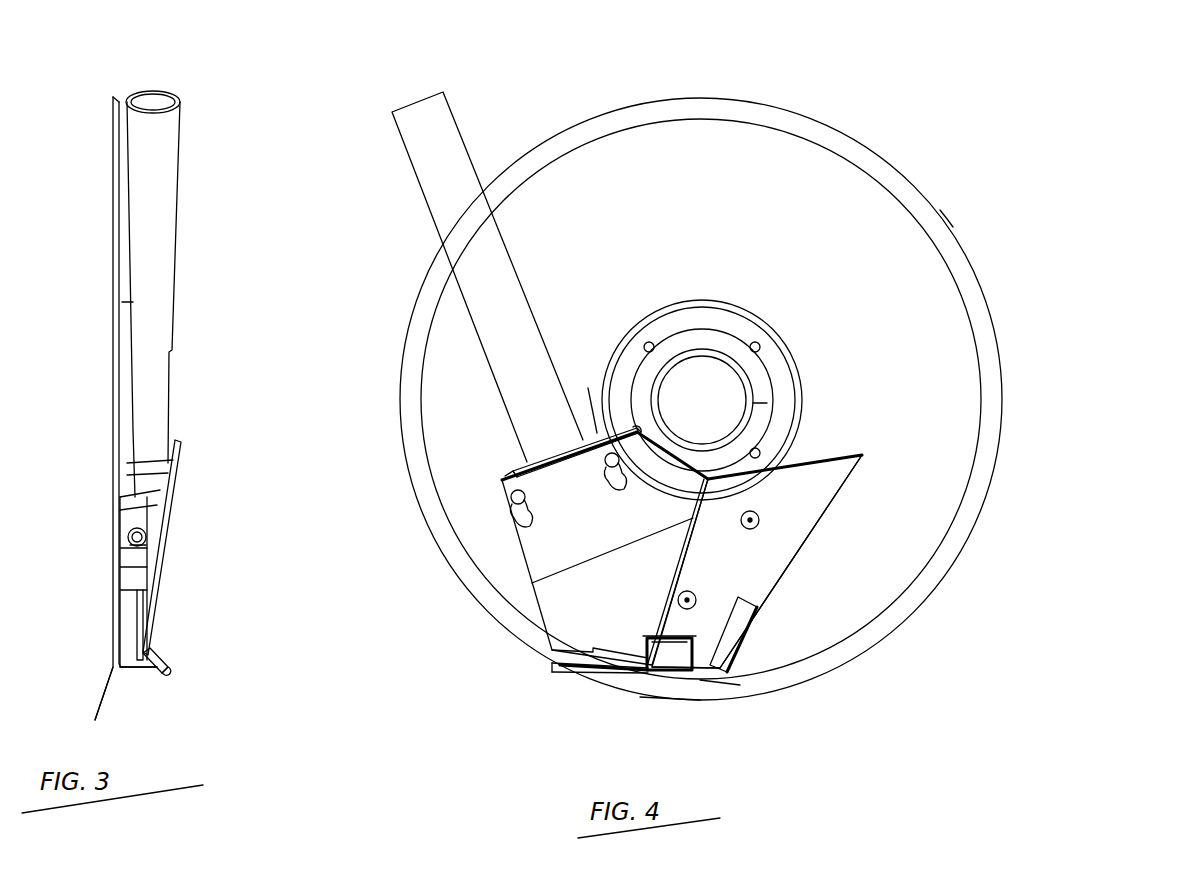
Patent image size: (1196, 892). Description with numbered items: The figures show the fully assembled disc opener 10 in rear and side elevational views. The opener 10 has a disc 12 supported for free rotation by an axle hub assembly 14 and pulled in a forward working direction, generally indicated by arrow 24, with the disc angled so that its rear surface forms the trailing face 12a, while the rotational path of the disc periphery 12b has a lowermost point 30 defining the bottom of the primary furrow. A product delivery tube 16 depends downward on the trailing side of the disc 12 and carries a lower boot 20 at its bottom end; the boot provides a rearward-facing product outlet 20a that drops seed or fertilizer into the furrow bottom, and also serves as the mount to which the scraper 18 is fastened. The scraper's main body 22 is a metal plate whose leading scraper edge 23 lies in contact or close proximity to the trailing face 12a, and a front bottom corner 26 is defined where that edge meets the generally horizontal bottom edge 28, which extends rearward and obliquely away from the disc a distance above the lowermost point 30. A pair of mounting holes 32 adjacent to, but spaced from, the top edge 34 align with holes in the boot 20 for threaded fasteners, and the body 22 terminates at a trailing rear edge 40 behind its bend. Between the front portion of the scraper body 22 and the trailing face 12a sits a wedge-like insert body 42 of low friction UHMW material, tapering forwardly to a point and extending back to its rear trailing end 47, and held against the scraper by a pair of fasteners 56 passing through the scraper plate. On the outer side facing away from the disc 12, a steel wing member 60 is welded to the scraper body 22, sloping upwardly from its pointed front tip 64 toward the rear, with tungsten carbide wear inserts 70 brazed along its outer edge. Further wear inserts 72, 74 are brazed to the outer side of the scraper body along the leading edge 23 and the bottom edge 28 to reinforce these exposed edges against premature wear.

In FIG. 4, the opener 10 is at (1012, 112).
In FIG. 3, the disc 12 is at (117, 240).
In FIG. 4, the disc 12 is at (810, 175).
In FIG. 3, the trailing face 12a is at (122, 273).
In FIG. 4, the trailing face 12a is at (877, 205).
In FIG. 3, the periphery 12b is at (115, 95).
In FIG. 4, the periphery 12b is at (953, 227).
In FIG. 3, the axle hub assembly 14 is at (128, 347).
In FIG. 4, the axle hub assembly 14 is at (715, 375).
In FIG. 3, the product delivery tube 16 is at (168, 212).
In FIG. 4, the product delivery tube 16 is at (503, 283).
In FIG. 3, the scraper 18 is at (177, 468).
In FIG. 4, the scraper 18 is at (778, 483).
In FIG. 3, the lower boot 20 is at (143, 517).
In FIG. 3, the product outlet 20a is at (143, 545).
In FIG. 3, the main body 22 is at (152, 593).
In FIG. 4, the main body 22 is at (768, 542).
In FIG. 4, the leading scraper edge 23 is at (845, 490).
In FIG. 4, the arrow 24 is at (1168, 415).
In FIG. 4, the front bottom corner 26 is at (723, 673).
In FIG. 4, the bottom edge 28 is at (678, 677).
In FIG. 3, the lowermost point 30 is at (110, 700).
In FIG. 4, the lowermost point 30 is at (697, 703).
In FIG. 4, the mounting holes 32 is at (532, 522).
In FIG. 4, the top edge 34 is at (597, 437).
In FIG. 4, the trailing rear edge 40 is at (537, 613).
In FIG. 3, the insert body 42 is at (133, 632).
In FIG. 3, the rear trailing end 47 is at (127, 610).
In FIG. 4, the fasteners 56 is at (743, 518).
In FIG. 3, the wing member 60 is at (157, 650).
In FIG. 4, the wing member 60 is at (553, 665).
In FIG. 3, the pointed front tip 64 is at (150, 668).
In FIG. 4, the pointed front tip 64 is at (552, 660).
In FIG. 3, the wear inserts 70 is at (166, 668).
In FIG. 4, the wear inserts 70 is at (580, 675).
In FIG. 4, the wear insert 72 is at (740, 625).
In FIG. 4, the wear insert 74 is at (658, 662).